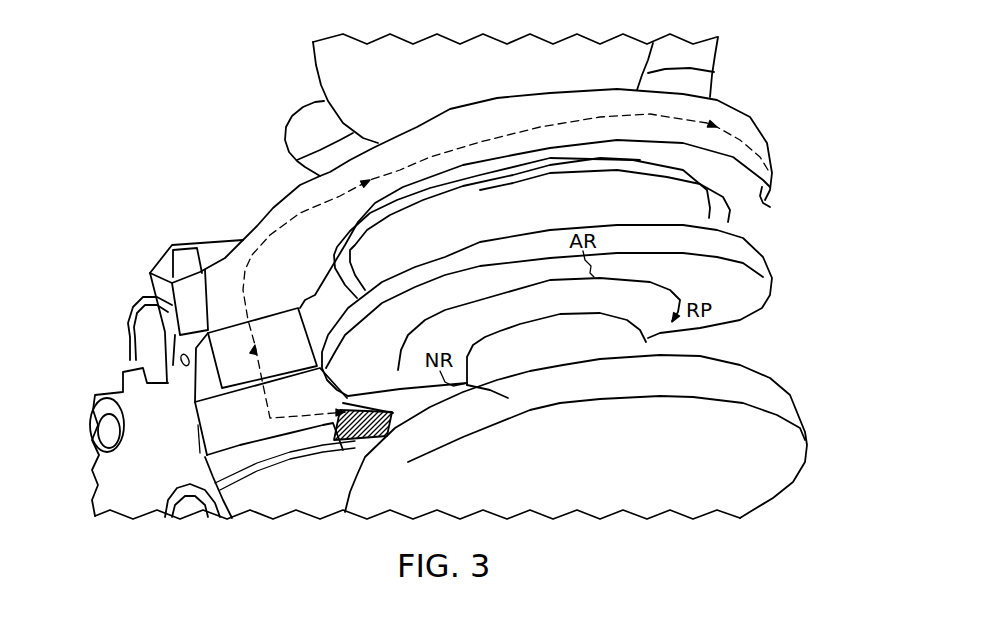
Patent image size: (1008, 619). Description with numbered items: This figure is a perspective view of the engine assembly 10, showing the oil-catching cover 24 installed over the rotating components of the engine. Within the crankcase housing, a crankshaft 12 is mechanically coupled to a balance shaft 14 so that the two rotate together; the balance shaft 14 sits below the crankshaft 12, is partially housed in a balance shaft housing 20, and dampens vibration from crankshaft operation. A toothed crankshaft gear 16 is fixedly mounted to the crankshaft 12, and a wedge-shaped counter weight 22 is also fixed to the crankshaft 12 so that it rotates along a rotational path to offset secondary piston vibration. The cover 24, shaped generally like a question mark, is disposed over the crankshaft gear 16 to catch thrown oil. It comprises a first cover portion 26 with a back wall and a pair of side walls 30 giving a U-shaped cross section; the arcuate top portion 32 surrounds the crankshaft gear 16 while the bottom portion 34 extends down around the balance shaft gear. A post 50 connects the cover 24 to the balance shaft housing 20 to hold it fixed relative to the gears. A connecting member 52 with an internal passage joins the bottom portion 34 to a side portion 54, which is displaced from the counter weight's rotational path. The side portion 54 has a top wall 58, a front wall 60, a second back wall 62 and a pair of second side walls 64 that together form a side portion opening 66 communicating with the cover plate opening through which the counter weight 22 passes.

The engine assembly 10 is at (785, 57).
The crankshaft 12 is at (576, 355).
The balance shaft 14 is at (196, 292).
The crankshaft gear 16 is at (560, 228).
The balance shaft housing 20 is at (417, 528).
The counter weight 22 is at (595, 371).
The cover 24 is at (553, 253).
The first cover portion 26 is at (559, 41).
The side walls 30 is at (771, 138).
The top portion 32 is at (499, 89).
The bottom portion 34 is at (112, 310).
The post 50 is at (175, 385).
The connecting member 52 is at (297, 357).
The side portion 54 is at (155, 442).
The top wall 58 is at (218, 431).
The front wall 60 is at (375, 444).
The second back wall 62 is at (220, 489).
The second side walls 64 is at (285, 466).
The side portion opening 66 is at (287, 480).